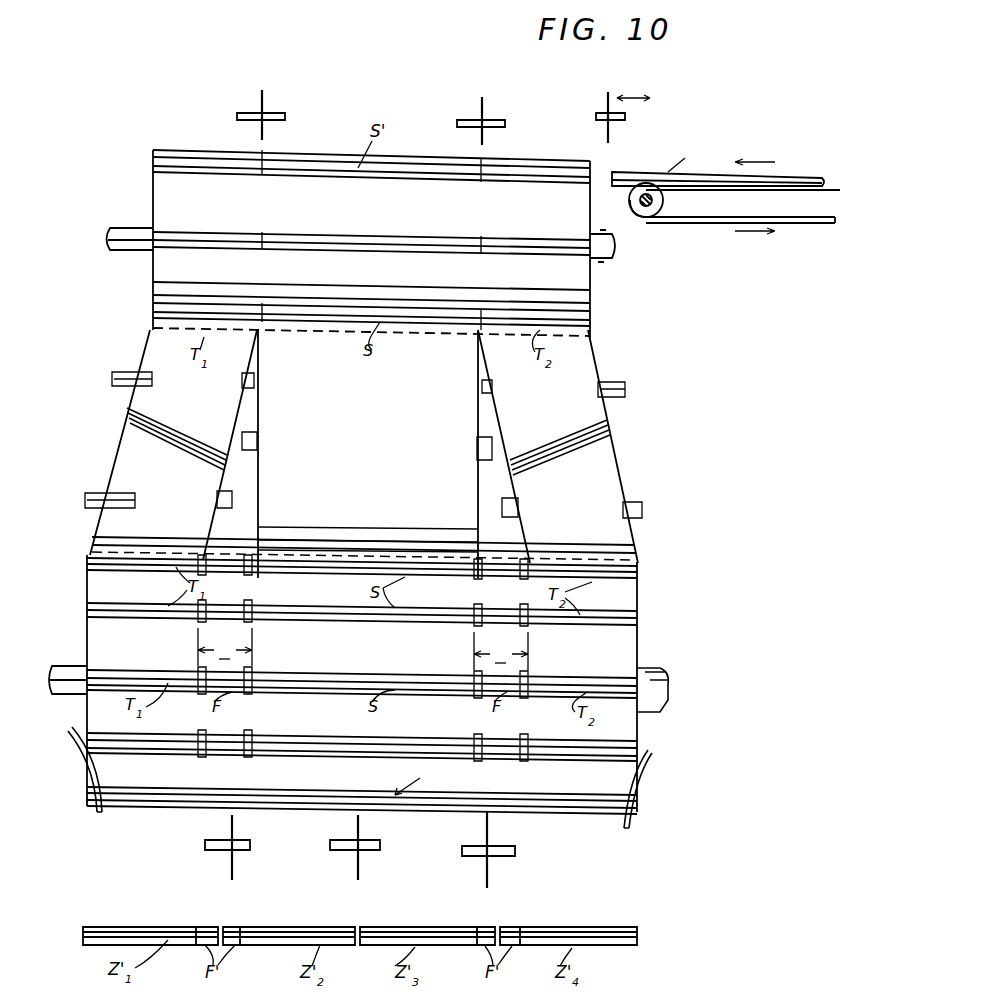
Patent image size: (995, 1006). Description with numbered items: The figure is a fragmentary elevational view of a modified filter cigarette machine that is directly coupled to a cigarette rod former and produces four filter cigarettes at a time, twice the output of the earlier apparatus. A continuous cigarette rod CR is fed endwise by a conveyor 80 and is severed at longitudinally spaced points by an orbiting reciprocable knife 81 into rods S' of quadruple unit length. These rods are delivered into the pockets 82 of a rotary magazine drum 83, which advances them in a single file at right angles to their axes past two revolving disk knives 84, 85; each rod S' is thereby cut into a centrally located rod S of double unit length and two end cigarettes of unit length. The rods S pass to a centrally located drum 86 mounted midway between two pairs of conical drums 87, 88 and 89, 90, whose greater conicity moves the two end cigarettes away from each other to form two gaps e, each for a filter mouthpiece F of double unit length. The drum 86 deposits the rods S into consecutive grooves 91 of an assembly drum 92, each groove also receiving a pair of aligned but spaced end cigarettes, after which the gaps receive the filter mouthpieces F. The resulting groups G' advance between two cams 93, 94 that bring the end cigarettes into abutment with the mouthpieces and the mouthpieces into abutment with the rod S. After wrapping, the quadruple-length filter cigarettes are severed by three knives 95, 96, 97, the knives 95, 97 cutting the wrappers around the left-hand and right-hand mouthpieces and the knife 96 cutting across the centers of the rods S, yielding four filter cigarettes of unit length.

The conveyor 80 is at (699, 229).
The orbiting reciprocable knife 81 is at (611, 99).
The pockets 82 is at (193, 237).
The rotary magazine drum 83 is at (143, 293).
The revolving disk knife 84 is at (267, 104).
The revolving disk knife 85 is at (487, 111).
The centrally located drum 86 is at (456, 502).
The conical drum 87 is at (152, 342).
The conical drum 88 is at (133, 455).
The conical drum 89 is at (597, 410).
The conical drum 90 is at (600, 467).
The grooves 91 is at (592, 684).
The assembly drum 92 is at (79, 637).
The cam 93 is at (78, 750).
The cam 94 is at (646, 765).
The knife 95 is at (238, 833).
The knife 96 is at (364, 833).
The knife 97 is at (493, 836).